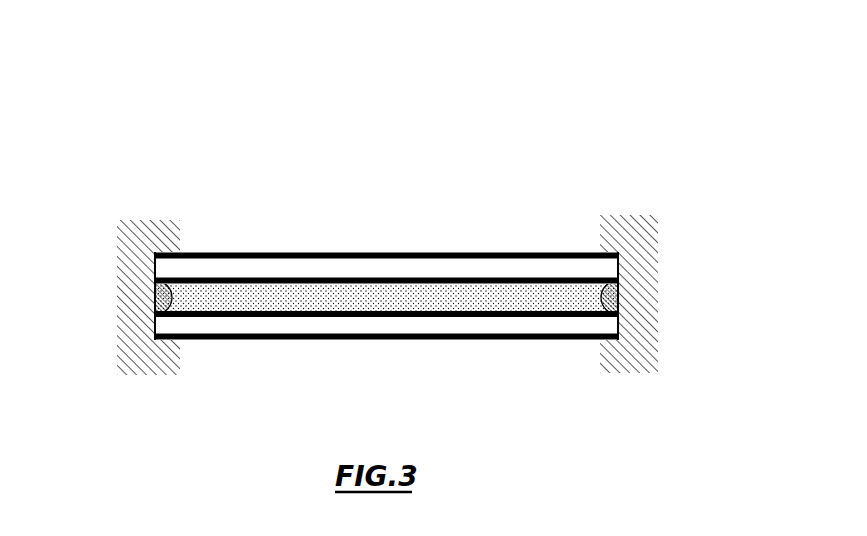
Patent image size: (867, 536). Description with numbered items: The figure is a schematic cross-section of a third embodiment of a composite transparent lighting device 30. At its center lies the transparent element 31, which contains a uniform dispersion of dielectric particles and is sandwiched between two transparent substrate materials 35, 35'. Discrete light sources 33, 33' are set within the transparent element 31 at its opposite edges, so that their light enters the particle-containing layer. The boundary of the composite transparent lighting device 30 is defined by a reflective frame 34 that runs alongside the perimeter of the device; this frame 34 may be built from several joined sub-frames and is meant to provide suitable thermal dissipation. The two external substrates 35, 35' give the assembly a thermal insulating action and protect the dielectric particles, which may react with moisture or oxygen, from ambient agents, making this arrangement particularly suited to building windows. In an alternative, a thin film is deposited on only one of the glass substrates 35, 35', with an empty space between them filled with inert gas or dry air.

The composite transparent lighting device 30 is at (369, 222).
The transparent element 31 is at (400, 292).
The discrete light source 33 is at (128, 229).
The discrete light source 33' is at (546, 237).
The reflective frame 34 is at (120, 293).
The transparent substrate material 35 is at (386, 213).
The transparent substrate material 35' is at (386, 376).